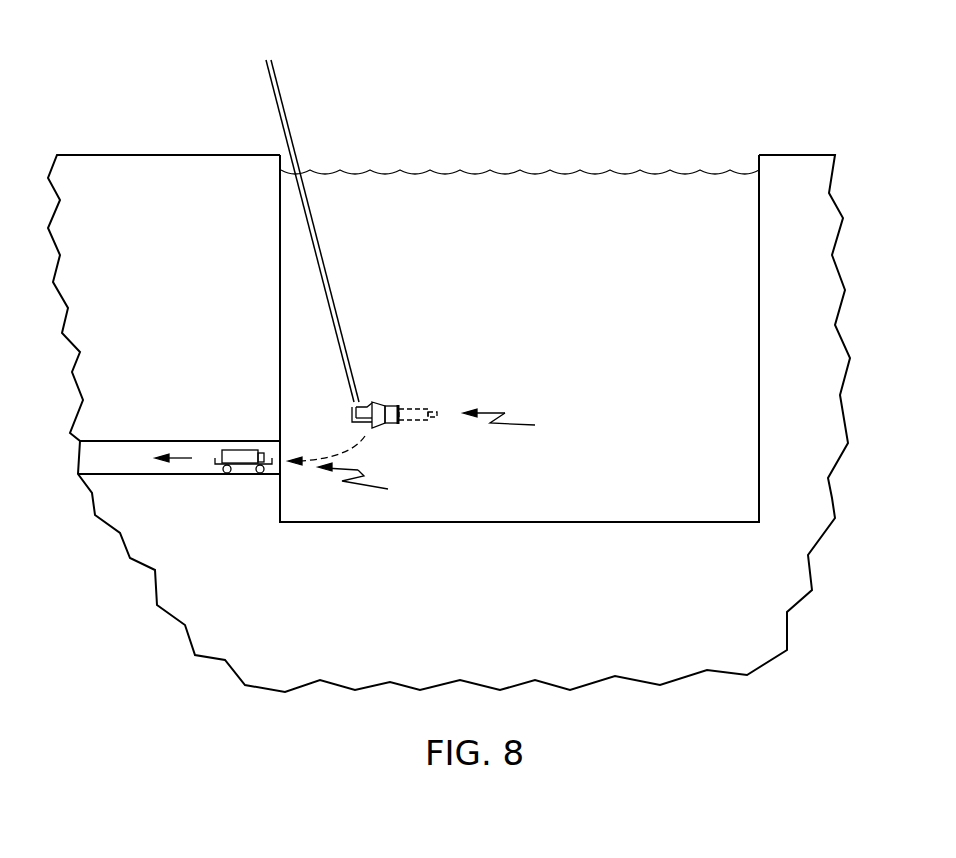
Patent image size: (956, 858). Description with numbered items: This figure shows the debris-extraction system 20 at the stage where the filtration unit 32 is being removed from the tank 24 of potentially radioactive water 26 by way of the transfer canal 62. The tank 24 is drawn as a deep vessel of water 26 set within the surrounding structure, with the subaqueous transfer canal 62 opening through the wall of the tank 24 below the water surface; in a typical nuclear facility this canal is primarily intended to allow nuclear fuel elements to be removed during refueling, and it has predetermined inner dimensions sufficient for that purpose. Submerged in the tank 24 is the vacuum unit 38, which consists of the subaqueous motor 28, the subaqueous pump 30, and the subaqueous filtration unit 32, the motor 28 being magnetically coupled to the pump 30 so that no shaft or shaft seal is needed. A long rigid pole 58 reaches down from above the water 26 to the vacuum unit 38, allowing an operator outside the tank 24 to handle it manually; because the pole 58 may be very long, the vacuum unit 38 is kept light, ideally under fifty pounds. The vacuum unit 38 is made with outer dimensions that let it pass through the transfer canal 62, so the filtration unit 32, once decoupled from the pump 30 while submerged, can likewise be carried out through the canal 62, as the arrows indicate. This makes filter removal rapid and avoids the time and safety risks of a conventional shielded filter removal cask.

The system 20 is at (356, 643).
The tank 24 is at (754, 78).
The water 26 is at (496, 178).
The motor 28 is at (351, 407).
The pump 30 is at (387, 402).
The filtration unit 32 is at (424, 402).
The vacuum unit 38 is at (364, 456).
The rigid pole 58 is at (331, 282).
The transfer canal 62 is at (122, 447).